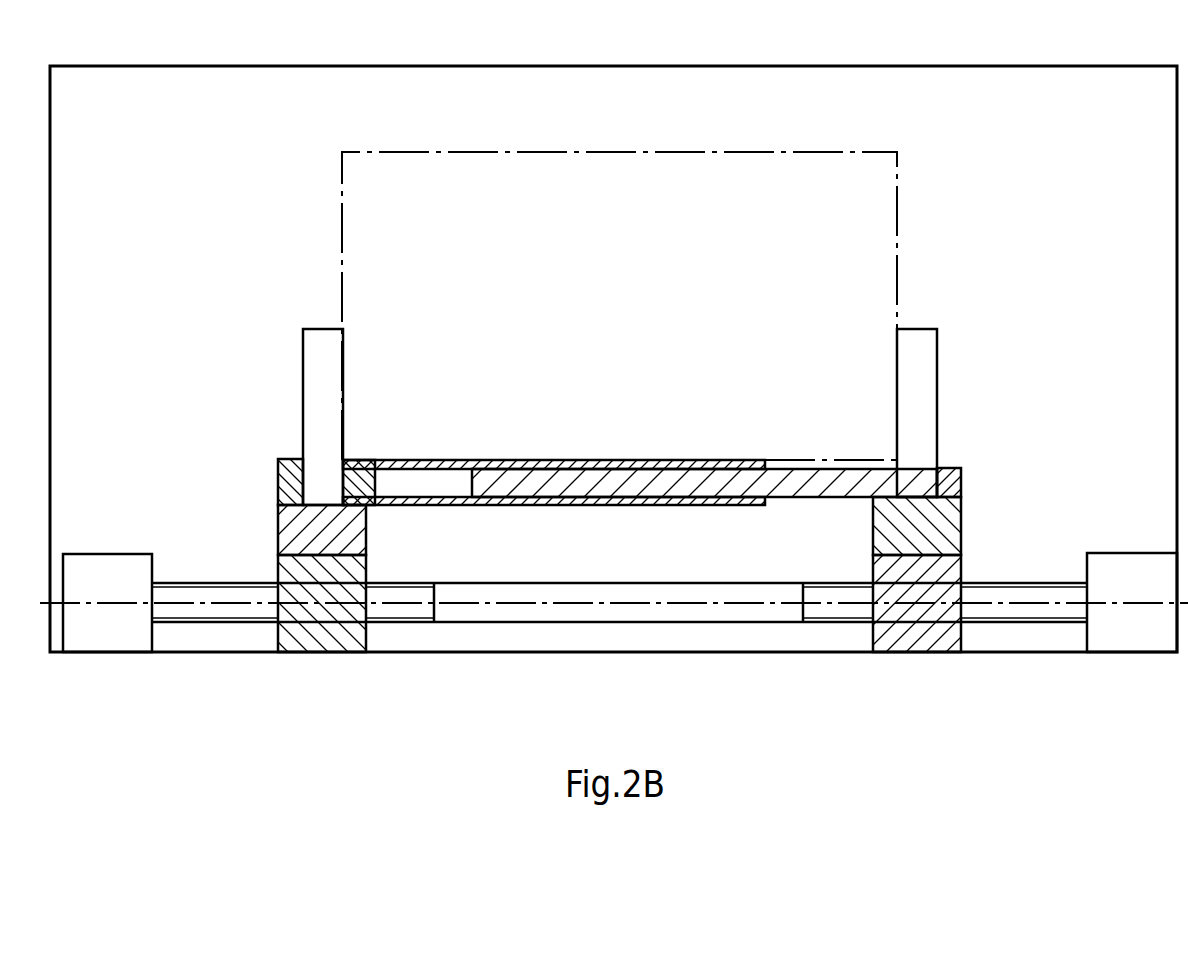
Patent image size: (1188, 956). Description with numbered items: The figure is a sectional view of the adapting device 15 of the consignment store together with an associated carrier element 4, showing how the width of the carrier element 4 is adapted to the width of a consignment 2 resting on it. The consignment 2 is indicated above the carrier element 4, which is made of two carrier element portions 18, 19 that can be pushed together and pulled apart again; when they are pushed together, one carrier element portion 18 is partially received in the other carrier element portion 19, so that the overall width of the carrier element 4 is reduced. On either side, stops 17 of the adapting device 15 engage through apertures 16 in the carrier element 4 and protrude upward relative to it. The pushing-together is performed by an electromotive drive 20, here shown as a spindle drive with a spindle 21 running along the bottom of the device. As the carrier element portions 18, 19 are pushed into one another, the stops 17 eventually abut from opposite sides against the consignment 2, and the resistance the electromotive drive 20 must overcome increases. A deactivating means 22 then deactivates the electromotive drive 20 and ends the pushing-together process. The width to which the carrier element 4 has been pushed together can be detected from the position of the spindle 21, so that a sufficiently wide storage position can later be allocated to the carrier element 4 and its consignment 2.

The adapting device 15 is at (1012, 208).
The consignment 2 is at (611, 246).
The carrier element 4 is at (642, 434).
The apertures 16 is at (300, 459).
The stops 17 is at (318, 372).
The carrier element portion 18 is at (802, 482).
The carrier element portion 19 is at (437, 465).
The electromotive drive 20 is at (104, 572).
The spindle 21 is at (217, 595).
The deactivating means 22 is at (1132, 573).